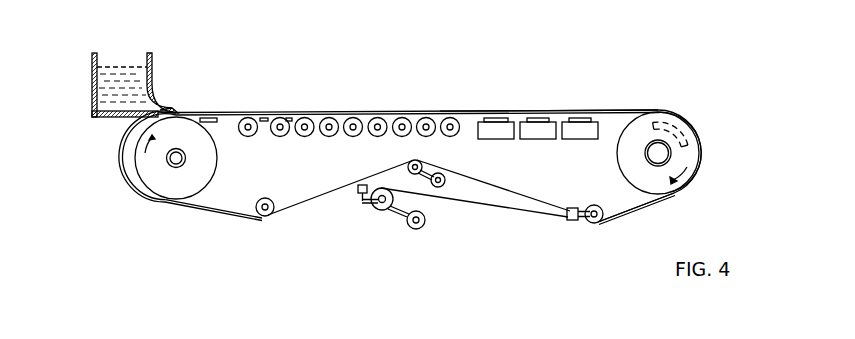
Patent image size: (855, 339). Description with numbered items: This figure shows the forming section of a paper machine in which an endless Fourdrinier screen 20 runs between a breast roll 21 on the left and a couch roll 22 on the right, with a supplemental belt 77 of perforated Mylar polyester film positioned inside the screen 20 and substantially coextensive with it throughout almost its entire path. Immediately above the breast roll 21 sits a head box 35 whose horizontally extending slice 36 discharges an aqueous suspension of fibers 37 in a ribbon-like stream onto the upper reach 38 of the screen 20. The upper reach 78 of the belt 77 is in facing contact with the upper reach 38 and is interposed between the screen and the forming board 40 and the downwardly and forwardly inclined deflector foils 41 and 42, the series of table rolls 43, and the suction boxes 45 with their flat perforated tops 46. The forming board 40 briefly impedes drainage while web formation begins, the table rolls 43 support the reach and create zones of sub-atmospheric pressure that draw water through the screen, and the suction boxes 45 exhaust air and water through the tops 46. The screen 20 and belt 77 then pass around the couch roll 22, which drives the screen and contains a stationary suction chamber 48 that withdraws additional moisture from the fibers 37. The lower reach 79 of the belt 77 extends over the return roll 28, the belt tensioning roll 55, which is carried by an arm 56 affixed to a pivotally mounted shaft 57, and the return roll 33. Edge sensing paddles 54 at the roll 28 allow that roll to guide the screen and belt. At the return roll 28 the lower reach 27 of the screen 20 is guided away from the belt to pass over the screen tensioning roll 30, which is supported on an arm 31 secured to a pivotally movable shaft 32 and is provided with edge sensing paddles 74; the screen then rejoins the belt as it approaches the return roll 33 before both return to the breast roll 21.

The Fourdrinier screen 20 is at (505, 209).
The breast roll 21 is at (158, 187).
The couch roll 22 is at (690, 150).
The lower reach 27 is at (297, 210).
The roll 28 is at (603, 220).
The tensioning roll 30 is at (375, 204).
The arm 31 is at (397, 216).
The pivotally movable shaft 32 is at (414, 229).
The screen guide roll 33 is at (262, 218).
The head box 35 is at (92, 66).
The slice 36 is at (166, 109).
The fibers 37 is at (231, 113).
The upper reach 38 is at (338, 111).
The forming board 40 is at (210, 118).
The deflector foil 41 is at (265, 117).
The deflector foil 42 is at (290, 118).
The table rolls 43 is at (300, 137).
The suction boxes 45 is at (572, 139).
The flat tops 46 is at (576, 118).
The suction chamber 48 is at (686, 118).
The edge sensing paddles 54 is at (572, 220).
The tensioning roll 55 is at (420, 162).
The arm 56 is at (430, 172).
The pivotally mounted shaft 57 is at (444, 184).
The edge sensing paddles 74 is at (361, 185).
The supplemental belt 77 is at (482, 183).
The upper reach 78 is at (466, 111).
The lower reach 79 is at (325, 194).